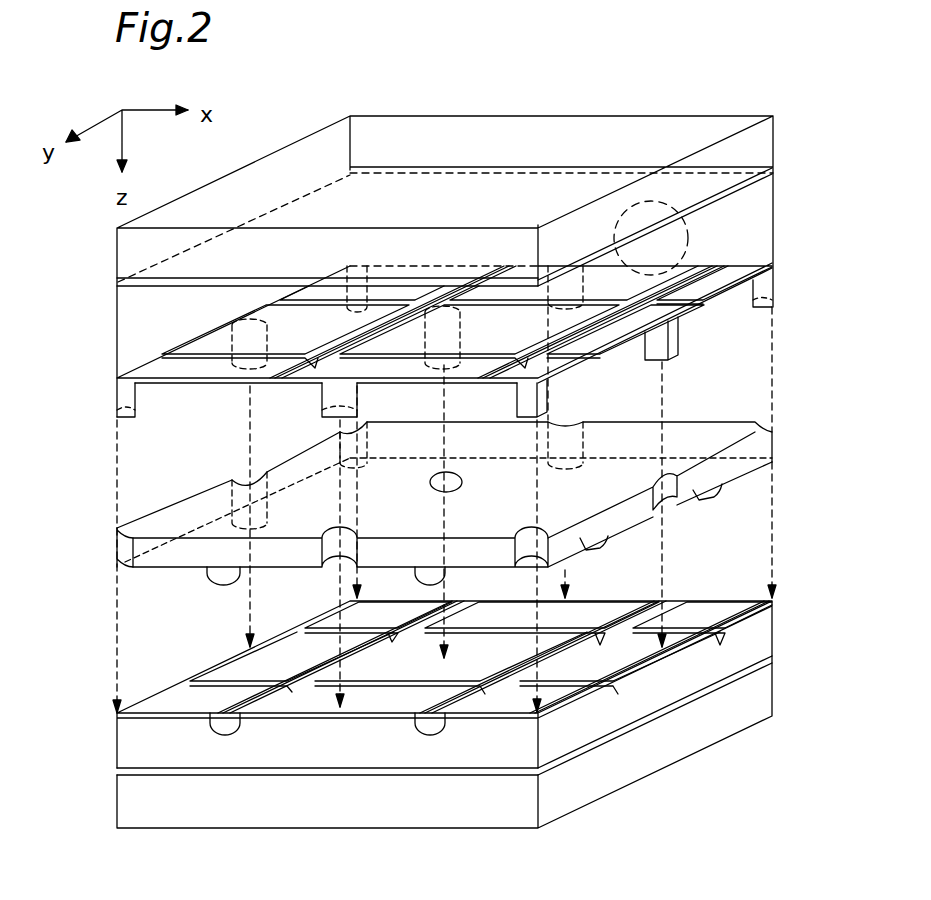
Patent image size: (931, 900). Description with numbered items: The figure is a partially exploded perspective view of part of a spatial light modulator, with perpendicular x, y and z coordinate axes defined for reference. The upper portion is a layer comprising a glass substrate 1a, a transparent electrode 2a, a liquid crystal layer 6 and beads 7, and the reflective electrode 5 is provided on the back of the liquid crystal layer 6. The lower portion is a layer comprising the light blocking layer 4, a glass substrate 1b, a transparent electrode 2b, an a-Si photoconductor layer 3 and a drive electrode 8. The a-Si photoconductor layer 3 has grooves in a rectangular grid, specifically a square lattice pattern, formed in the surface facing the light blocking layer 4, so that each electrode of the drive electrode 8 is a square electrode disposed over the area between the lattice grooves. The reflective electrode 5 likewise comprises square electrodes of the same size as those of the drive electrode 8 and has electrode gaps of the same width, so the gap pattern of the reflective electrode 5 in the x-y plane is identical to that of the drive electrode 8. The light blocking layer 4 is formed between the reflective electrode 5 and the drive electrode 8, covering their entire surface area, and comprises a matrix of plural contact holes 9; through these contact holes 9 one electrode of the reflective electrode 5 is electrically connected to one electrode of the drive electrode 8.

The glass substrate 1a is at (766, 140).
The transparent electrode 2a is at (766, 180).
The beads 7 is at (690, 232).
The liquid crystal layer 6 is at (766, 235).
The reflective electrode 5 is at (766, 262).
The light blocking layer 4 is at (770, 448).
The contact holes 9 is at (688, 504).
The drive electrode 8 is at (766, 592).
The a-Si photoconductor layer 3 is at (766, 640).
The transparent electrode 2b is at (766, 668).
The glass substrate 1b is at (766, 698).